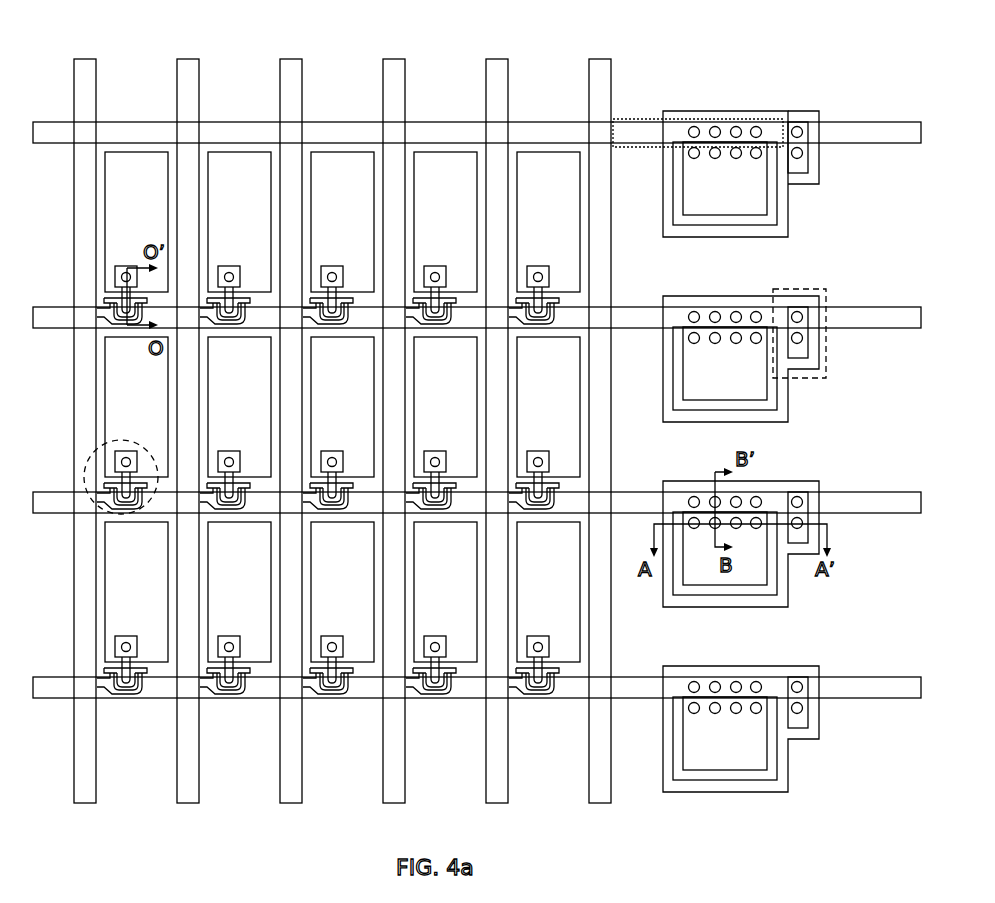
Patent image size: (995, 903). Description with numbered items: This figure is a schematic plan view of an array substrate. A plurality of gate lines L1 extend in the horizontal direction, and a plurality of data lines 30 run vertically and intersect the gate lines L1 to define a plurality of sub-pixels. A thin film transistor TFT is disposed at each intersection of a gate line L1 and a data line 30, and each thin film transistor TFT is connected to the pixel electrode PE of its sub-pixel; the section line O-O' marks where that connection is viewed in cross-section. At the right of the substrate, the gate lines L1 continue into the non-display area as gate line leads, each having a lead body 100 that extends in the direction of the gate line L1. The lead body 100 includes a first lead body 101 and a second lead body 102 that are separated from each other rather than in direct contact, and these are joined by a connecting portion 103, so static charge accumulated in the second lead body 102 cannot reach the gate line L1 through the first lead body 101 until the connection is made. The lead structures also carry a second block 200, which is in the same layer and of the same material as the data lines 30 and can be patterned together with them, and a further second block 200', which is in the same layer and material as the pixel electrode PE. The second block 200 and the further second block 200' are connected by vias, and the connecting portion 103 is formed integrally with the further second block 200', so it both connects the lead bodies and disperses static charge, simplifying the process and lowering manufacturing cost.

The data line 30 is at (295, 83).
The gate line L1 is at (423, 128).
The pixel electrode PE is at (115, 400).
The thin film transistor TFT is at (85, 470).
The lead body 100 is at (727, 119).
The first lead body 101 is at (641, 117).
The second lead body 102 is at (810, 115).
The connecting portion 103 is at (828, 303).
The second block 200 is at (776, 544).
The further second block 200' is at (754, 568).